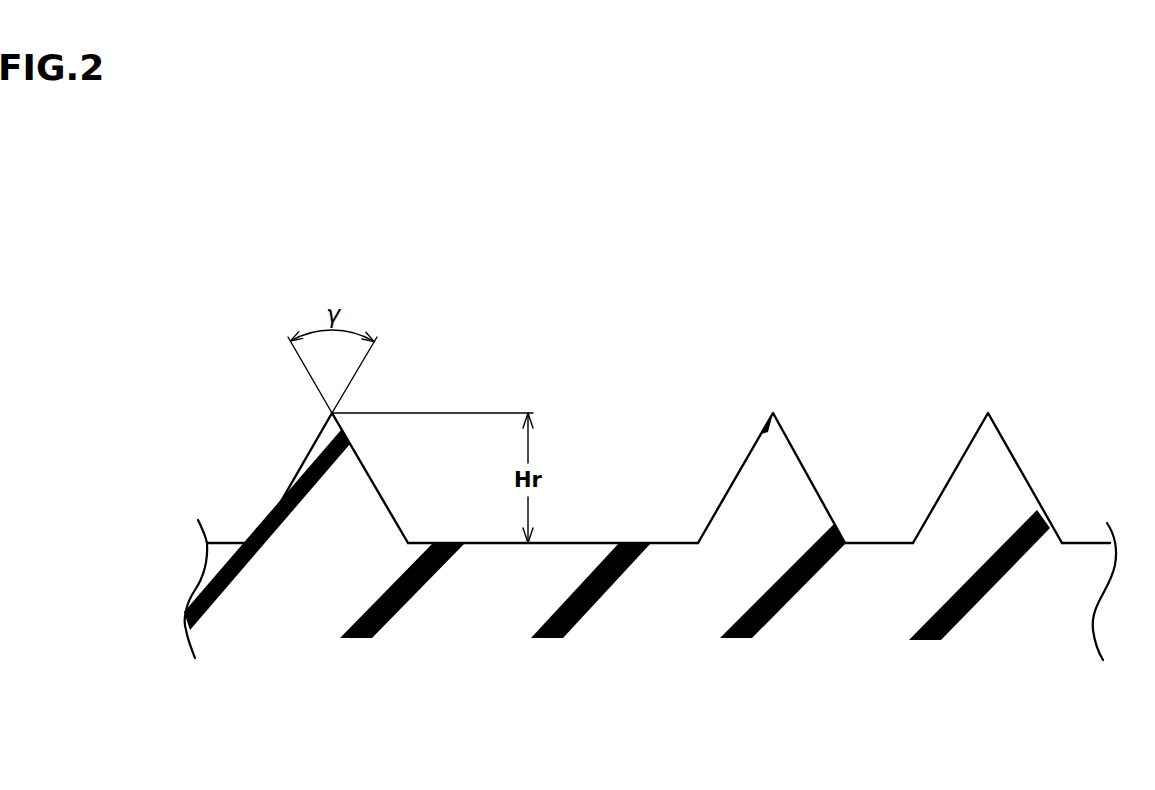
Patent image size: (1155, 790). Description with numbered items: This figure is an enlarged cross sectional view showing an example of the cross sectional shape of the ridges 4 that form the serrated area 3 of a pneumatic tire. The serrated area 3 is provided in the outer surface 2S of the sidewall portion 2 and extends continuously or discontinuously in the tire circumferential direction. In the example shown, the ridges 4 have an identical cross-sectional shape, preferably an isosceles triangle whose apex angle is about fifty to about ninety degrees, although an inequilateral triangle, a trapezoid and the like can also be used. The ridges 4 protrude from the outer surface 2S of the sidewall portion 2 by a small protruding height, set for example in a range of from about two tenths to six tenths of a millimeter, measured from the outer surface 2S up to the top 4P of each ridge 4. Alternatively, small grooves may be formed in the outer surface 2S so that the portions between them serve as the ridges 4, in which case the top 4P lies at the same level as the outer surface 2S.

The sidewall portion 2 is at (650, 560).
The outer surface 2S is at (473, 543).
The serrated area 3 is at (650, 501).
The ridge 4 is at (292, 475).
The top of the ridge 4P is at (332, 413).